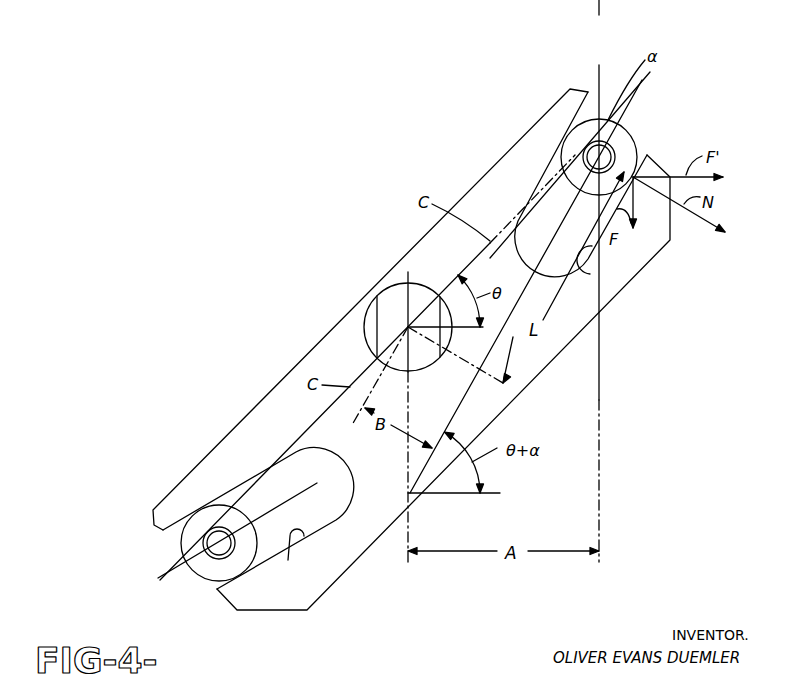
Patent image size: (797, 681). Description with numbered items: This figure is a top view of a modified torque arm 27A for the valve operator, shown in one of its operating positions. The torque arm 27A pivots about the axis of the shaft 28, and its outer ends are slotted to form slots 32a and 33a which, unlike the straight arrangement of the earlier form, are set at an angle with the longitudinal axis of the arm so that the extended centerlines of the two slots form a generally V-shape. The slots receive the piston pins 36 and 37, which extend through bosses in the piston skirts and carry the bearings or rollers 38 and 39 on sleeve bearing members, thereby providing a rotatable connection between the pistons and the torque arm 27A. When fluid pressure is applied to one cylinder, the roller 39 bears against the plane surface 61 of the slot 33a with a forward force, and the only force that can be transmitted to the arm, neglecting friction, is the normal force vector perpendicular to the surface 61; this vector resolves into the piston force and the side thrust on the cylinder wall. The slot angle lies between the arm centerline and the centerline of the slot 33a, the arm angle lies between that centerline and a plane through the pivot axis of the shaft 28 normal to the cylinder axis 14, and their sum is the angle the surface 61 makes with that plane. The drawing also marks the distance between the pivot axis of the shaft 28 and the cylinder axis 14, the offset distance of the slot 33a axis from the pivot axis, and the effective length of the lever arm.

The cylinder axis 14 is at (603, 403).
The torque arm 27A is at (350, 310).
The shaft 28 is at (420, 293).
The slot 32a is at (296, 450).
The slot 33a is at (536, 182).
The piston pin 36 is at (222, 531).
The piston pin 37 is at (592, 146).
The roller 38 is at (237, 521).
The roller 39 is at (583, 156).
The plane surface 61 is at (640, 301).